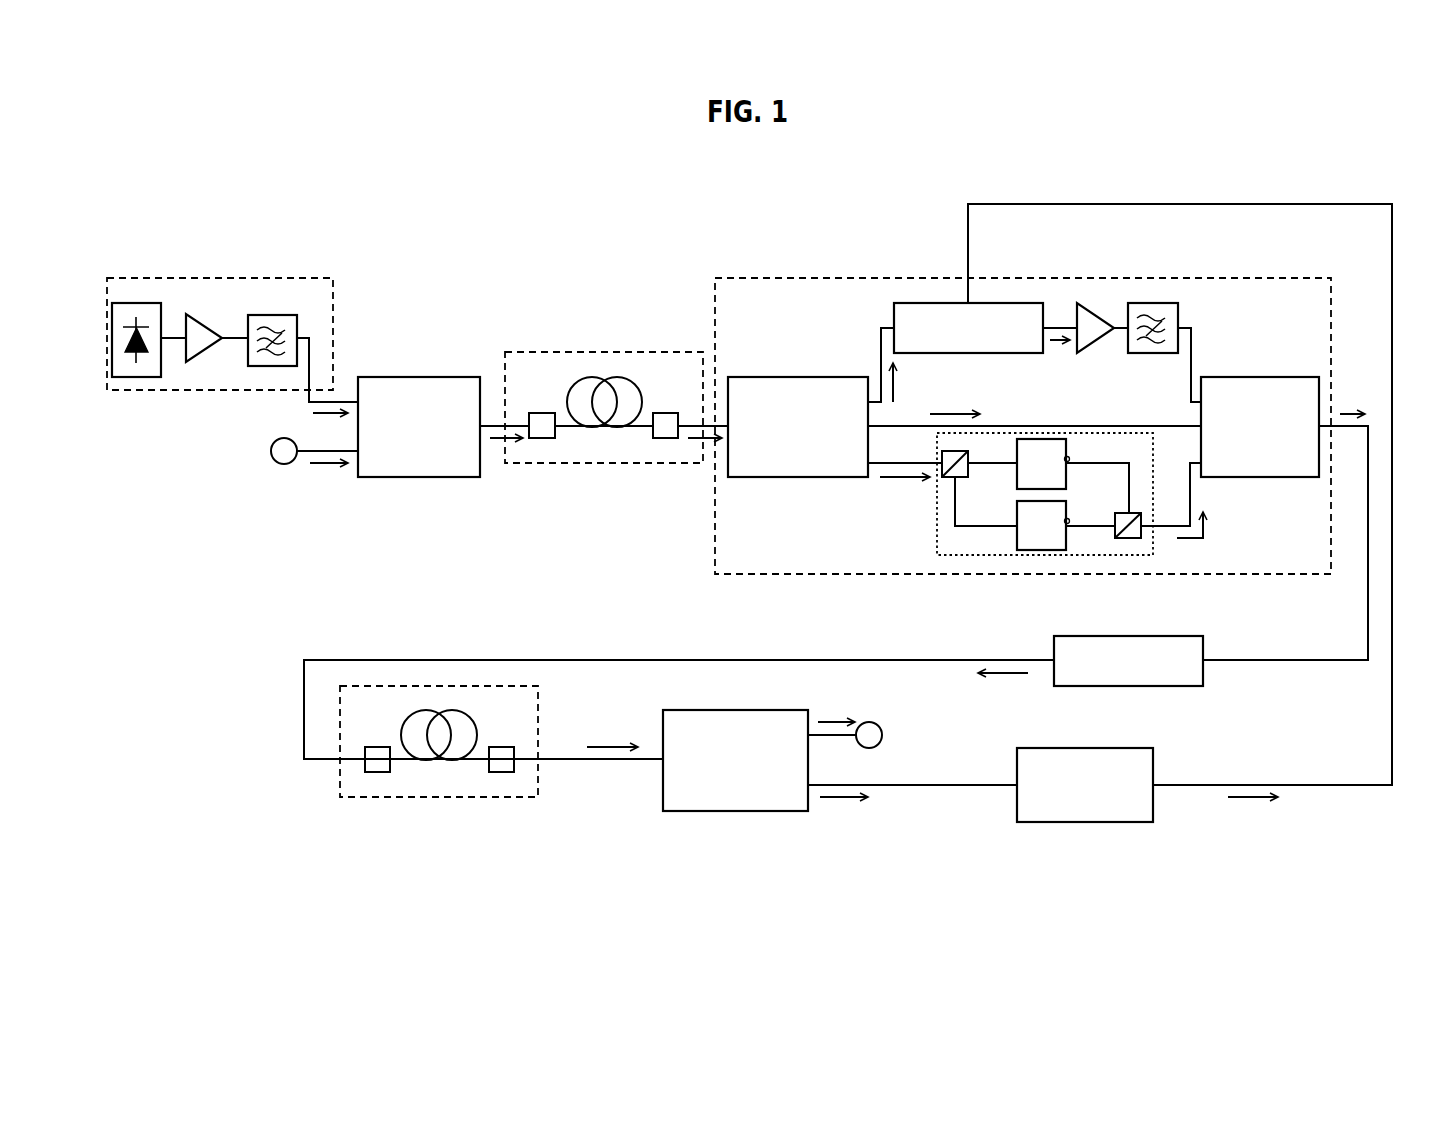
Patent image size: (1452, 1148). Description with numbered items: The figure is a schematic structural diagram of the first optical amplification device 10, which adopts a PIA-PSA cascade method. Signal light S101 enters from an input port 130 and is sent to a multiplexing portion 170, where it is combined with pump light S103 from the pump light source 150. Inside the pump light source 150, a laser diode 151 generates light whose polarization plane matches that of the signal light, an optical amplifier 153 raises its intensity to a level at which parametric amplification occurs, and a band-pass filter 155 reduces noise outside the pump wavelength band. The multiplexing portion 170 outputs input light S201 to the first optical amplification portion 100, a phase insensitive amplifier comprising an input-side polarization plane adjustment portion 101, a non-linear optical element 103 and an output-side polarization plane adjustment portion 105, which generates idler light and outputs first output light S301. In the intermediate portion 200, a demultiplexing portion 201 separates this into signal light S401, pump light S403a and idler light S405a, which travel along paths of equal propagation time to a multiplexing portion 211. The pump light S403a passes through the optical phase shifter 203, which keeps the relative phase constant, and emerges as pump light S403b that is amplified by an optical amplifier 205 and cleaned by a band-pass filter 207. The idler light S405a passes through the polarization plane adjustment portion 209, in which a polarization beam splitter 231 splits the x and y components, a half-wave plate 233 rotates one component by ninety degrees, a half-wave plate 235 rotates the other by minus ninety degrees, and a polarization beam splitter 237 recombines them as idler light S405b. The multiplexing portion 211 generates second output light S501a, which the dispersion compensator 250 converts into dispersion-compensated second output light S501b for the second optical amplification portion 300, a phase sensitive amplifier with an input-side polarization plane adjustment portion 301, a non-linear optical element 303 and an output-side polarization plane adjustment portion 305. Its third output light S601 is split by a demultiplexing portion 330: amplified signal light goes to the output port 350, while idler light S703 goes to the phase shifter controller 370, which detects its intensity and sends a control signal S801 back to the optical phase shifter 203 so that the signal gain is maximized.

The first optical amplification device 10 is at (1288, 172).
The first optical amplification portion 100 is at (542, 352).
The input-side polarization plane adjustment portion 101 is at (542, 438).
The non-linear optical element 103 is at (617, 427).
The output-side polarization plane adjustment portion 105 is at (666, 438).
The input port 130 is at (283, 465).
The pump light source 150 is at (213, 278).
The laser diode 151 is at (137, 377).
The optical amplifier 153 is at (200, 365).
The band-pass filter 155 is at (272, 366).
The multiplexing portion 170 is at (422, 477).
The intermediate portion 200 is at (797, 278).
The demultiplexing portion 201 is at (806, 477).
The optical phase shifter 203 is at (920, 303).
The optical amplifier 205 is at (1100, 318).
The band-pass filter 207 is at (1154, 303).
The polarization plane adjustment portion 209 is at (982, 555).
The multiplexing portion 211 is at (1258, 477).
The polarization beam splitter 231 is at (954, 451).
The half-wave plate 233 is at (1068, 446).
The half-wave plate 235 is at (1017, 540).
The polarization beam splitter 237 is at (1128, 538).
The dispersion compensator 250 is at (1167, 686).
The second optical amplification portion 300 is at (538, 768).
The input-side polarization plane adjustment portion 301 is at (377, 772).
The non-linear optical element 303 is at (452, 760).
The output-side polarization plane adjustment portion 305 is at (501, 772).
The demultiplexing portion 330 is at (742, 811).
The output port 350 is at (878, 722).
The phase shifter controller 370 is at (1087, 822).
The signal light S101 is at (327, 470).
The pump light S103 is at (331, 411).
The input light S201 is at (497, 445).
The first output light S301 is at (697, 445).
The signal light S401 is at (951, 417).
The pump light S403a is at (897, 386).
The pump light S403b is at (1053, 345).
The idler light S405a is at (907, 485).
The idler light S405b is at (1190, 545).
The second output light S501a is at (1342, 410).
The second output light S501b is at (1006, 678).
The third output light S601 is at (610, 742).
The idler light S703 is at (832, 718).
The control signal S801 is at (1255, 801).